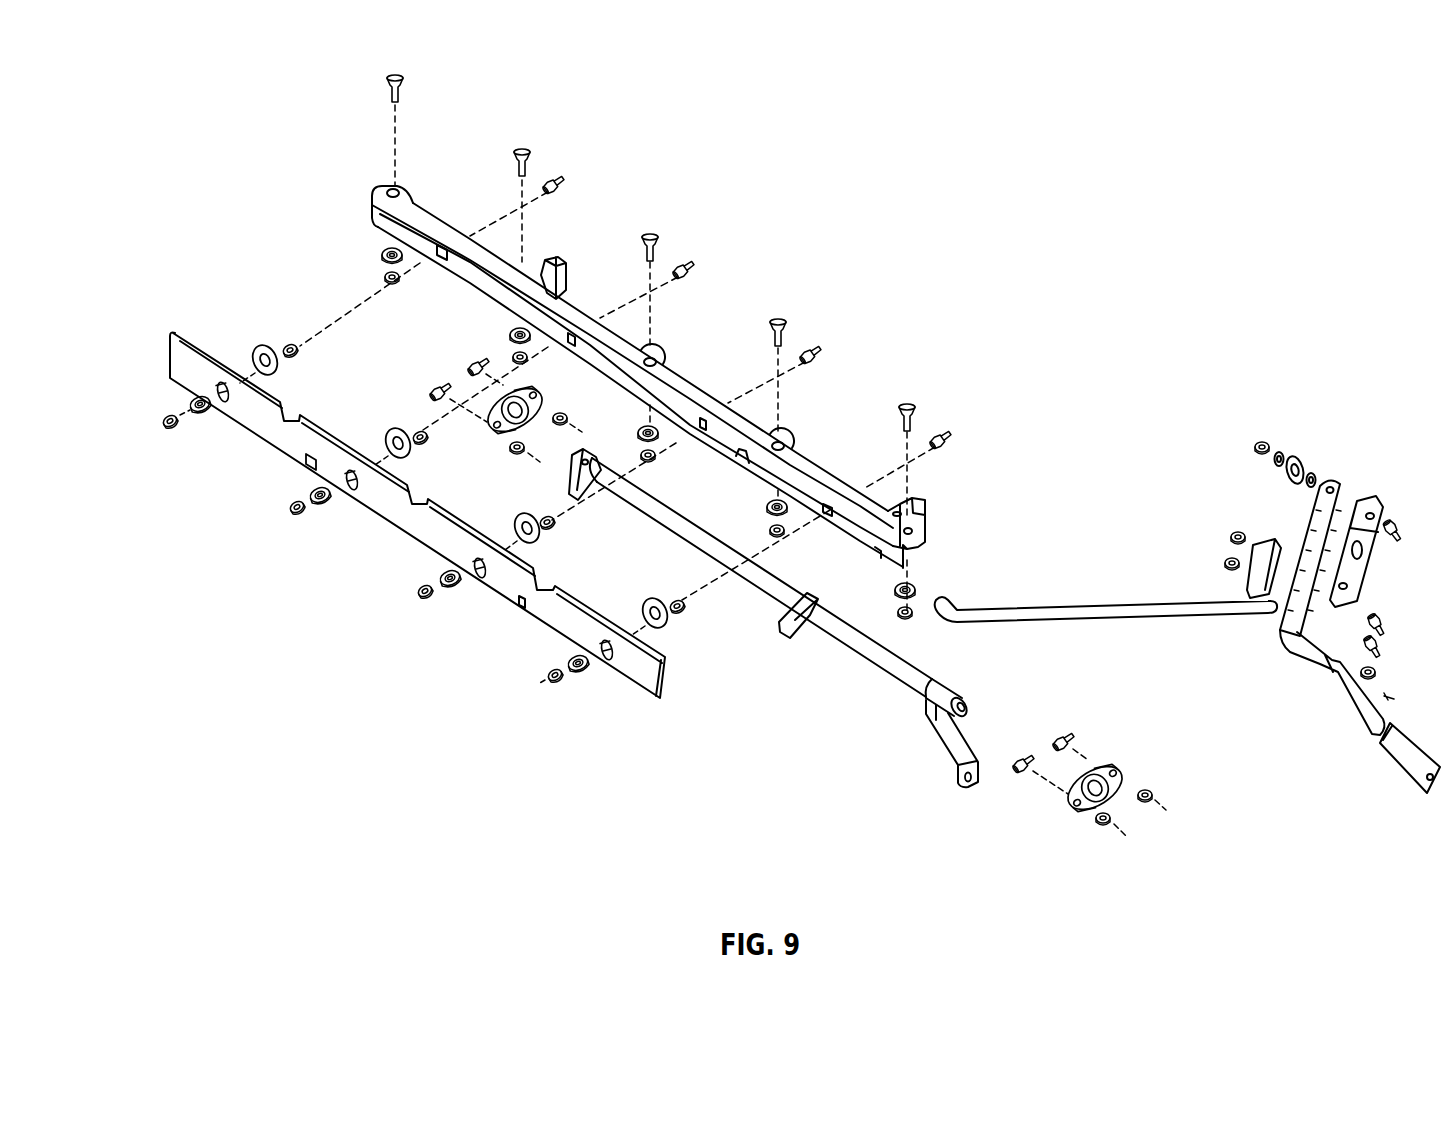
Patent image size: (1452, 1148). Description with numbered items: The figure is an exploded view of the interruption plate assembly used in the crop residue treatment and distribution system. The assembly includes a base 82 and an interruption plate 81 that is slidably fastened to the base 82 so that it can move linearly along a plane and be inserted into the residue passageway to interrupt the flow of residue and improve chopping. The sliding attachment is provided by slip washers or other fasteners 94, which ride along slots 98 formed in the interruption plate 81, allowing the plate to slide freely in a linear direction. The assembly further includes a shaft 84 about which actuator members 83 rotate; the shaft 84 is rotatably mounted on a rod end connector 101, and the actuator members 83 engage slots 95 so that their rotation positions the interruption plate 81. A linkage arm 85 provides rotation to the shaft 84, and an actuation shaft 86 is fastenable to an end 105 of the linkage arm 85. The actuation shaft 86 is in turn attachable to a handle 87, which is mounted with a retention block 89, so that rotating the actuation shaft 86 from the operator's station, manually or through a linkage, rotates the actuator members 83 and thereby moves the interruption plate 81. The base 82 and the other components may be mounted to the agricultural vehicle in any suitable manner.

The interruption plate 81 is at (150, 337).
The base 82 is at (354, 194).
The actuator member 83 is at (590, 463).
The shaft 84 is at (698, 526).
The linkage arm 85 is at (956, 738).
The actuation shaft 86 is at (1100, 616).
The handle 87 is at (1353, 704).
The retention block 89 is at (1360, 576).
The fasteners 94 is at (262, 349).
The slots 95 is at (306, 466).
The slots 98 is at (226, 404).
The rod end connector 101 is at (510, 398).
The end 105 is at (974, 784).